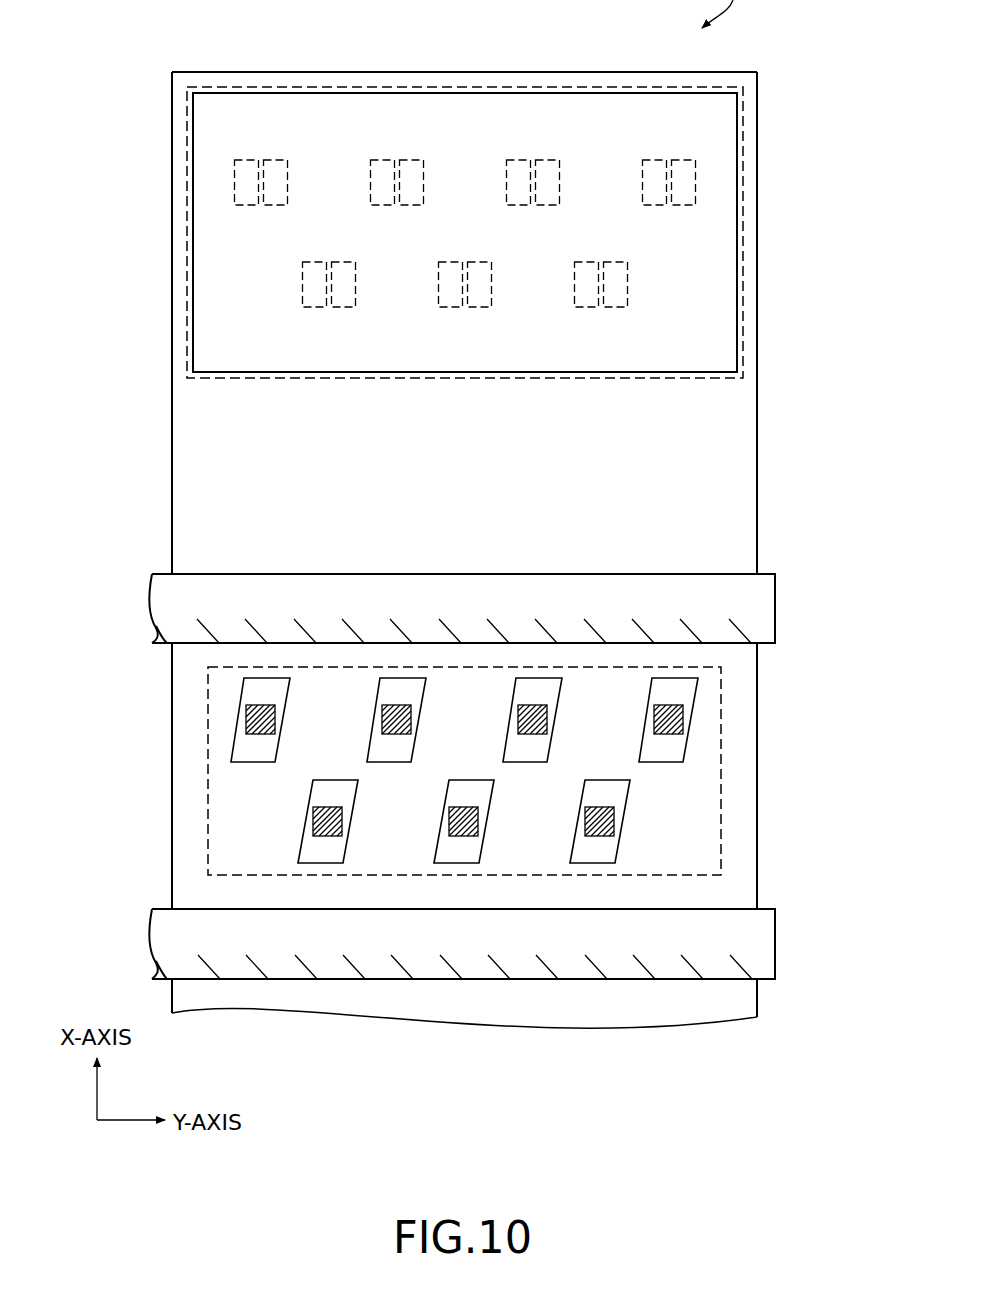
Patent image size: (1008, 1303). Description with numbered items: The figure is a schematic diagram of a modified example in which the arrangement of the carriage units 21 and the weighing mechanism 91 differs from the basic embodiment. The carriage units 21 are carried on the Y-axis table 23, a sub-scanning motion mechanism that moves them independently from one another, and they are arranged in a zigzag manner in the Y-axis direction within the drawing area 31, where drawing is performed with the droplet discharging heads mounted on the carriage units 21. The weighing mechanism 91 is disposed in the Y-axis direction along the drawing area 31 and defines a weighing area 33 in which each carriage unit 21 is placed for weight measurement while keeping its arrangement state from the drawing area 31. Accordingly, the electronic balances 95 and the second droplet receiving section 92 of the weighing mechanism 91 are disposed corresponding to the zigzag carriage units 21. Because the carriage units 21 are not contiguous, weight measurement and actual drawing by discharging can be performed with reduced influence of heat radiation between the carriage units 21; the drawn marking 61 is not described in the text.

The weighing mechanism 91 is at (788, 107).
The second droplet receiving section 92 is at (737, 227).
The weighing area 33 is at (743, 312).
The electronic balances 95 is at (247, 205).
The Y-axis table 23 is at (787, 595).
The drawing area 31 is at (721, 770).
The carriage units 21 is at (250, 766).
The nozzle group 61 is at (454, 772).